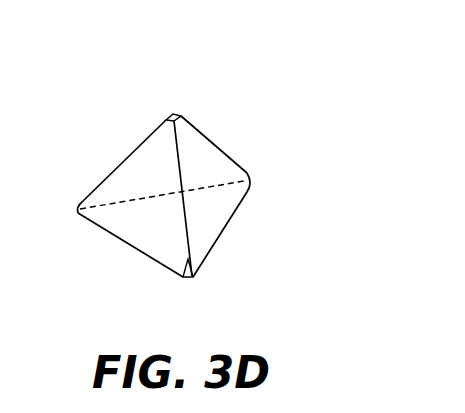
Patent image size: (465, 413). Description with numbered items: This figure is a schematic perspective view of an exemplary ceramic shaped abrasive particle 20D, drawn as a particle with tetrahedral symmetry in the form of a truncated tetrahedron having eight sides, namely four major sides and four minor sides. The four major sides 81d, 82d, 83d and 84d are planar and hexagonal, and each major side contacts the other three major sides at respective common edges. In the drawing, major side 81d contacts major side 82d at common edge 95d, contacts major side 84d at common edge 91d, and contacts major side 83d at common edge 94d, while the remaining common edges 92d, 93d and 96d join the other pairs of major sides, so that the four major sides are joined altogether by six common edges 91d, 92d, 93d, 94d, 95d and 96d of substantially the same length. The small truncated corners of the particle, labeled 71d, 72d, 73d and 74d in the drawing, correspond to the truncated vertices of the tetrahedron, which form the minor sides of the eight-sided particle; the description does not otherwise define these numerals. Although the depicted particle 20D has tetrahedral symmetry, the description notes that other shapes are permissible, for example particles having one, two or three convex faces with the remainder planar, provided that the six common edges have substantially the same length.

The ceramic shaped abrasive particle 20D is at (232, 88).
The vertex 71d is at (250, 173).
The vertex 72d is at (192, 276).
The vertex 73d is at (76, 212).
The vertex 74d is at (174, 113).
The major side 81d is at (202, 243).
The major side 82d is at (103, 220).
The major side 83d is at (113, 188).
The major side 84d is at (218, 208).
The common edge 91d is at (248, 193).
The common edge 92d is at (133, 252).
The common edge 93d is at (135, 200).
The common edge 94d is at (207, 135).
The common edge 95d is at (188, 260).
The common edge 96d is at (165, 120).